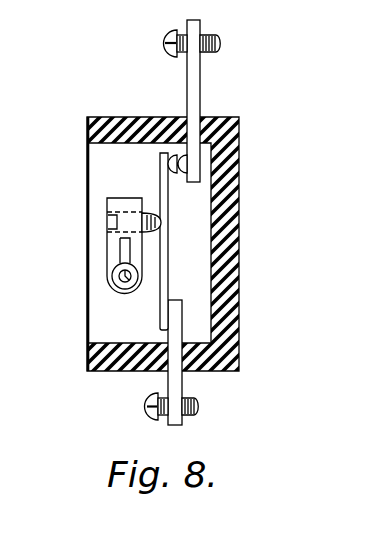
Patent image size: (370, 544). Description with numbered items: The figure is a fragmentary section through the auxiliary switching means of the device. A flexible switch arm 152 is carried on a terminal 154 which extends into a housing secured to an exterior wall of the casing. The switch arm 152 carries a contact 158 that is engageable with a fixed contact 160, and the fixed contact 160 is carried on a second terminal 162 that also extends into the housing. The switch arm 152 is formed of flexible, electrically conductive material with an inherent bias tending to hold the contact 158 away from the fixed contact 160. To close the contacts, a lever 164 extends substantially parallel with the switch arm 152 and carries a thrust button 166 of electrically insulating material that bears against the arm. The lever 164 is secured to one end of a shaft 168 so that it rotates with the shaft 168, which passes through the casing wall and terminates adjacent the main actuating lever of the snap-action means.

The switch arm 152 is at (167, 247).
The terminal 154 is at (180, 386).
The contact 158 is at (169, 125).
The fixed contact 160 is at (176, 175).
The terminal 162 is at (195, 72).
The lever 164 is at (120, 204).
The thrust button 166 is at (149, 237).
The shaft 168 is at (125, 290).